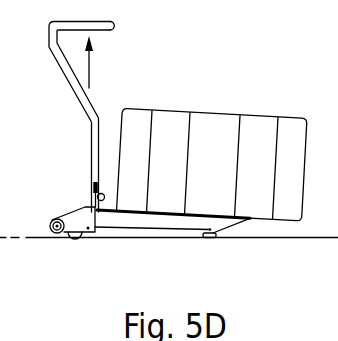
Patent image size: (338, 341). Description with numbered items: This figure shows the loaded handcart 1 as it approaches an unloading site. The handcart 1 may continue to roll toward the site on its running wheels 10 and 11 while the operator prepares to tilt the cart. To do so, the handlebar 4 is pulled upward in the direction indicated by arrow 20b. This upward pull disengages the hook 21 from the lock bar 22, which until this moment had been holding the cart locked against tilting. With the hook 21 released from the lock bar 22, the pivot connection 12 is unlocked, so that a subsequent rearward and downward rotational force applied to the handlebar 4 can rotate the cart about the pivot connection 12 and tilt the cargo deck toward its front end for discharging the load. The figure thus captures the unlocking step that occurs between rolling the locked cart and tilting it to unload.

The handcart 1 is at (184, 94).
The handlebar 4 is at (92, 109).
The running wheel 10 is at (213, 237).
The running wheel 11 is at (72, 238).
The pivot connection 12 is at (88, 229).
The arrow 20b is at (90, 72).
The hook 21 is at (101, 193).
The lock bar 22 is at (100, 214).